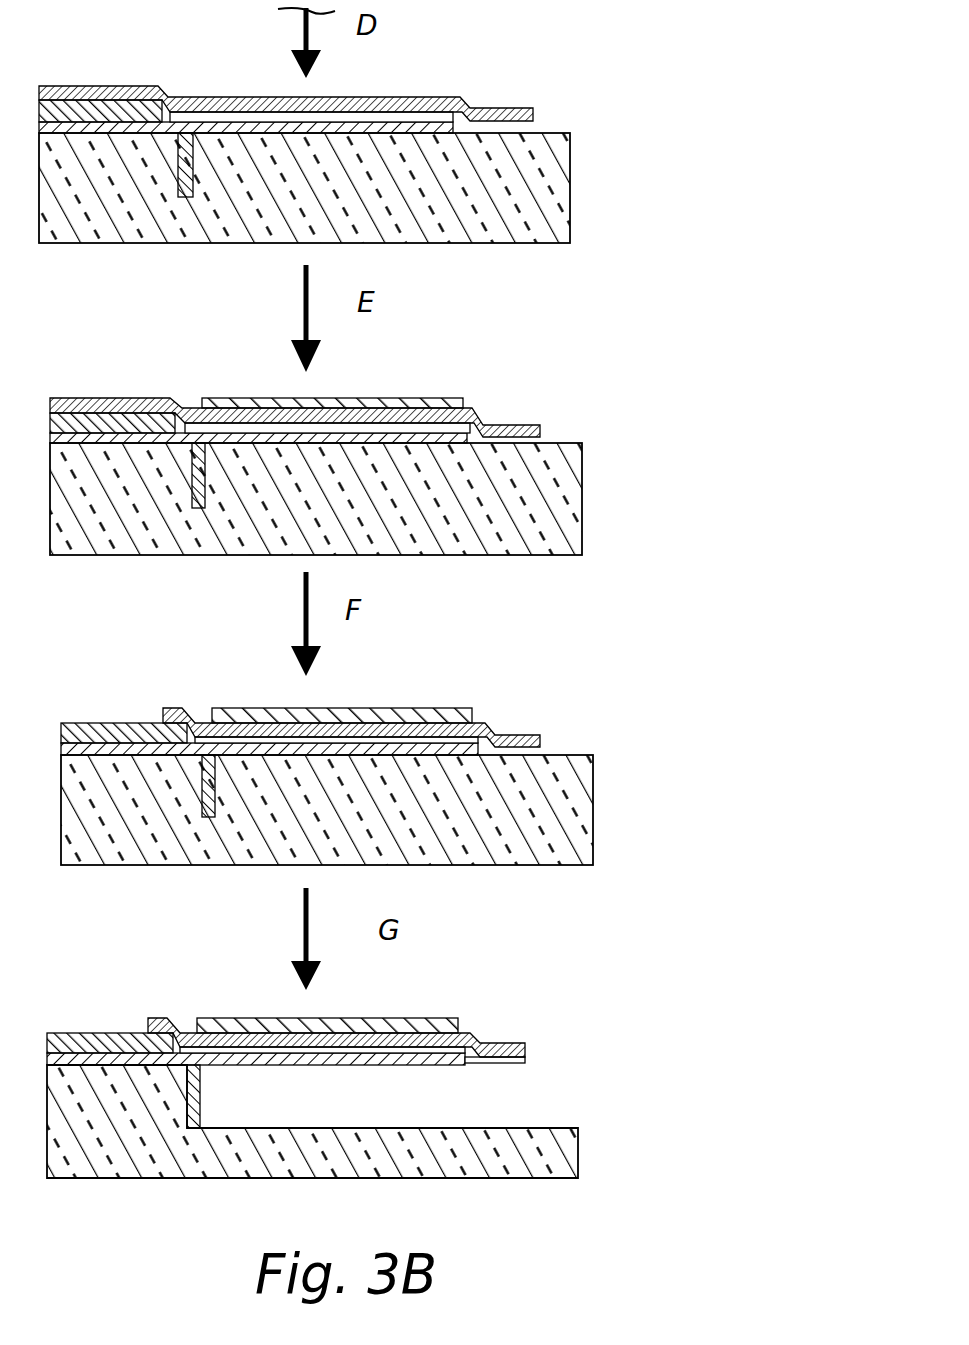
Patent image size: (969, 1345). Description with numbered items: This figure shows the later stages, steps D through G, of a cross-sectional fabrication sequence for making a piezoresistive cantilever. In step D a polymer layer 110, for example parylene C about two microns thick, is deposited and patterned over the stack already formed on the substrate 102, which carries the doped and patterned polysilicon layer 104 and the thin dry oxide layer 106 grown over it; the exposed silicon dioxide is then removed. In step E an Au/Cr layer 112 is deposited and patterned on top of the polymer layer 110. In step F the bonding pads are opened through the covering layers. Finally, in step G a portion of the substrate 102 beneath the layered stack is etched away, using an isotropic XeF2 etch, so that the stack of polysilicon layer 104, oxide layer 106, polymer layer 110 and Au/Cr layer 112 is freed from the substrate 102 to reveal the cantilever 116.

The substrate 102 is at (562, 1158).
The polysilicon layer 104 is at (120, 398).
The dry oxide layer 106 is at (128, 738).
The polymer layer 110 is at (128, 86).
The Au/Cr layer 112 is at (407, 397).
The cantilever 116 is at (517, 962).